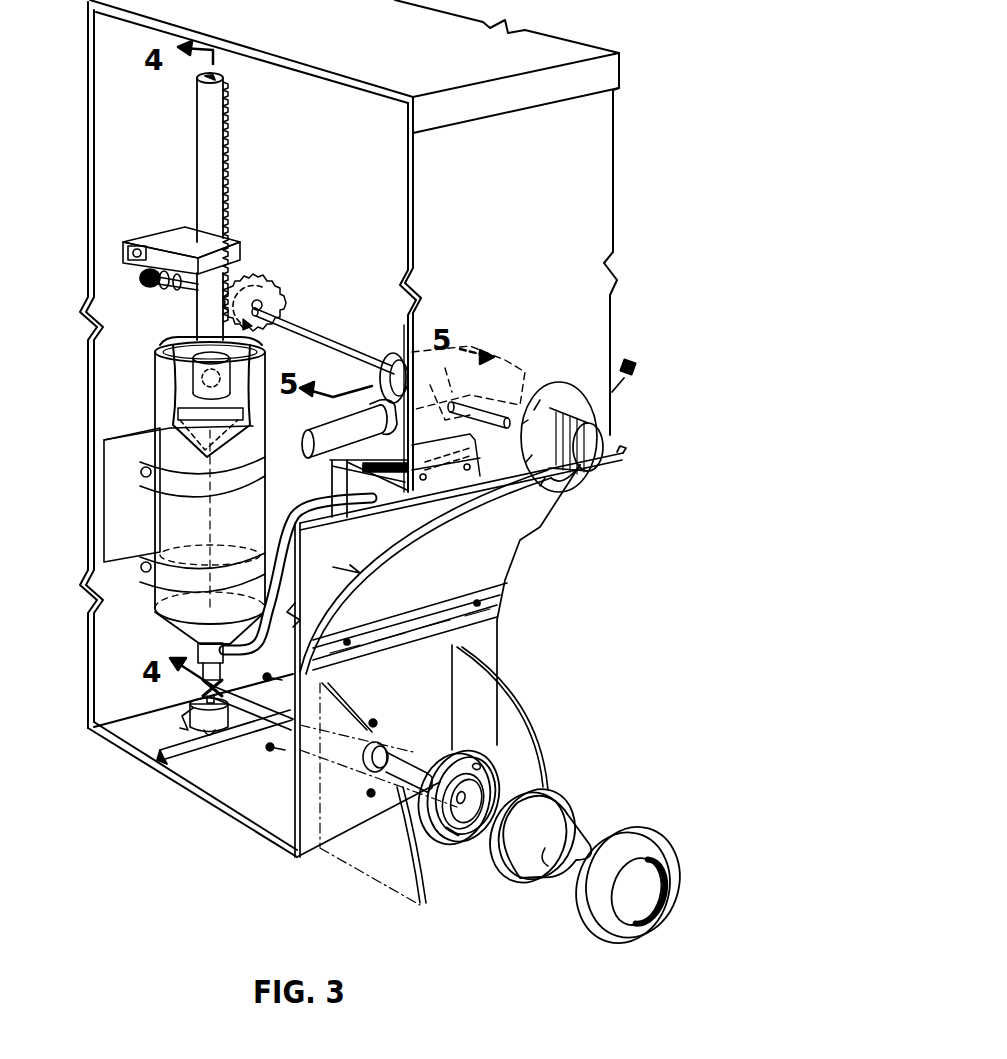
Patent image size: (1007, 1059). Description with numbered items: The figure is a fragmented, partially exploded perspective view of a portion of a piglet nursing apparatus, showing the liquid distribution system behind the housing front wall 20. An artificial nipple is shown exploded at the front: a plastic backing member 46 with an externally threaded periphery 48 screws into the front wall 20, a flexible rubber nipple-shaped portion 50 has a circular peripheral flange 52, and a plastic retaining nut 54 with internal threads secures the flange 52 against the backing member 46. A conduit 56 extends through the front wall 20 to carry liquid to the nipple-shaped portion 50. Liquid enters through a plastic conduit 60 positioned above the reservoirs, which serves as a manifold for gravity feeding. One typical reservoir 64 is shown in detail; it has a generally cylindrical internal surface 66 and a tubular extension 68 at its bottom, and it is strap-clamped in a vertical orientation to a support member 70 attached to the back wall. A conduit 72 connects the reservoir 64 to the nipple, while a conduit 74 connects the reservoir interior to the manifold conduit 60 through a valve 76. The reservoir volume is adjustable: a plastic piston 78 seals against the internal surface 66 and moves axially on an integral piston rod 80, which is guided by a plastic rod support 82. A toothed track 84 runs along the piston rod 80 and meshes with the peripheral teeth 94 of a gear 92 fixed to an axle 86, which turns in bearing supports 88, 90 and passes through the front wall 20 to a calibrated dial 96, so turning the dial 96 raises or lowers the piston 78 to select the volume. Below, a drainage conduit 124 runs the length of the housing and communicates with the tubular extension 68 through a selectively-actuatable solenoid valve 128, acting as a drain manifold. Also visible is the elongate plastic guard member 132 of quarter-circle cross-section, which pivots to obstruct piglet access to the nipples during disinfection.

The front wall 20 is at (605, 182).
The backing member 46 is at (465, 836).
The externally threaded periphery 48 is at (425, 845).
The nipple-shaped portion 50 is at (566, 822).
The circular peripheral flange 52 is at (535, 880).
The retaining nut 54 is at (670, 850).
The conduit 56 is at (420, 768).
The conduit 60 is at (328, 432).
The reservoir 64 is at (160, 424).
The internal surface 66 is at (165, 345).
The tubular extension 68 is at (198, 655).
The support member 70 is at (130, 525).
The conduit 72 is at (396, 748).
The conduit 74 is at (335, 612).
The valve 76 is at (392, 322).
The piston 78 is at (190, 380).
The piston rod 80 is at (200, 131).
The rod support 82 is at (180, 232).
The toothed track 84 is at (228, 165).
The axle 86 is at (300, 330).
The bearing support 88 is at (170, 293).
The bearing support 90 is at (478, 384).
The gear 92 is at (268, 280).
The peripheral teeth 94 is at (285, 298).
The calibrated dial 96 is at (600, 446).
The drainage conduit 124 is at (200, 742).
The solenoid valve 128 is at (186, 700).
The guard member 132 is at (505, 555).